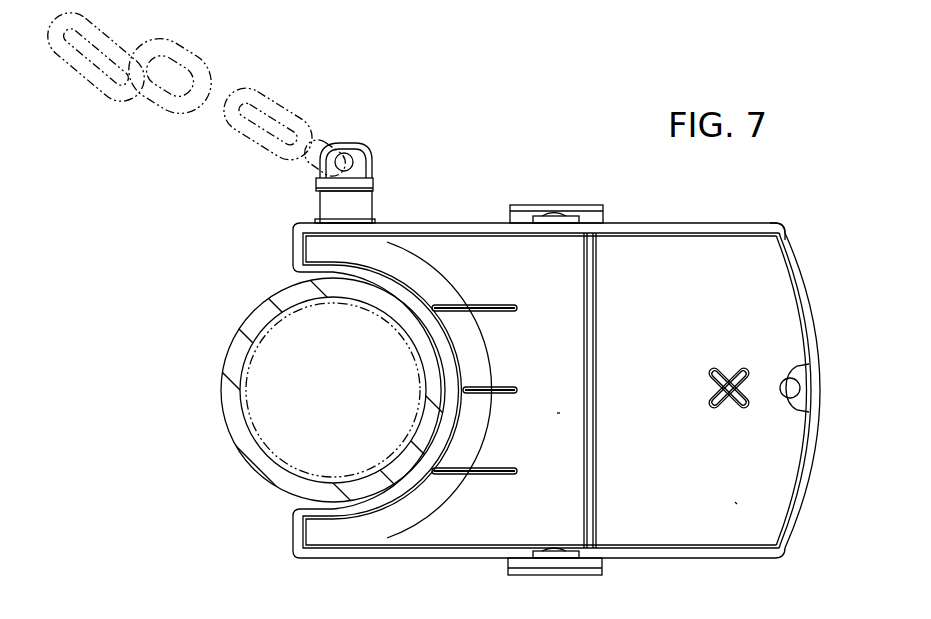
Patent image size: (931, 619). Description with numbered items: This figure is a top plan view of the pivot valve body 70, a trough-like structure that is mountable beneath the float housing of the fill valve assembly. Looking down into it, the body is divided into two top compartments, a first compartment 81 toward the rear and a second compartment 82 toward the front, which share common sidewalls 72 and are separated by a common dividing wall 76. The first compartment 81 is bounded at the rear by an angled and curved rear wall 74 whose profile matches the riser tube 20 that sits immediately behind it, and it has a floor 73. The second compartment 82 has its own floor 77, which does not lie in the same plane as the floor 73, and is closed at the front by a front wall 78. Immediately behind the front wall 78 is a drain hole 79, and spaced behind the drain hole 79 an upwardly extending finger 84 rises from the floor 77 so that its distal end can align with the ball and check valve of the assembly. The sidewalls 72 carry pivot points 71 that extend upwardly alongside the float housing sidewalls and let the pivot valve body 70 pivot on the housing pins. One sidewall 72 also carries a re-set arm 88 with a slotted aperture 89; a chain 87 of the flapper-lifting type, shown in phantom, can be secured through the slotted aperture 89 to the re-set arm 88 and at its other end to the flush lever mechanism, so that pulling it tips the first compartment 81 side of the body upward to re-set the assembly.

The riser tube 20 is at (262, 309).
The pivot valve body 70 is at (662, 558).
The pivot points 71 is at (553, 205).
The sidewalls 72 is at (655, 221).
The floor 73 is at (557, 413).
The rear wall 74 is at (417, 490).
The dividing wall 76 is at (600, 318).
The floor 77 is at (735, 502).
The front wall 78 is at (801, 512).
The drain hole 79 is at (786, 400).
The first compartment 81 is at (538, 272).
The second compartment 82 is at (757, 257).
The finger 84 is at (735, 367).
The chain 87 is at (187, 62).
The re-set arm 88 is at (355, 210).
The slotted aperture 89 is at (357, 160).